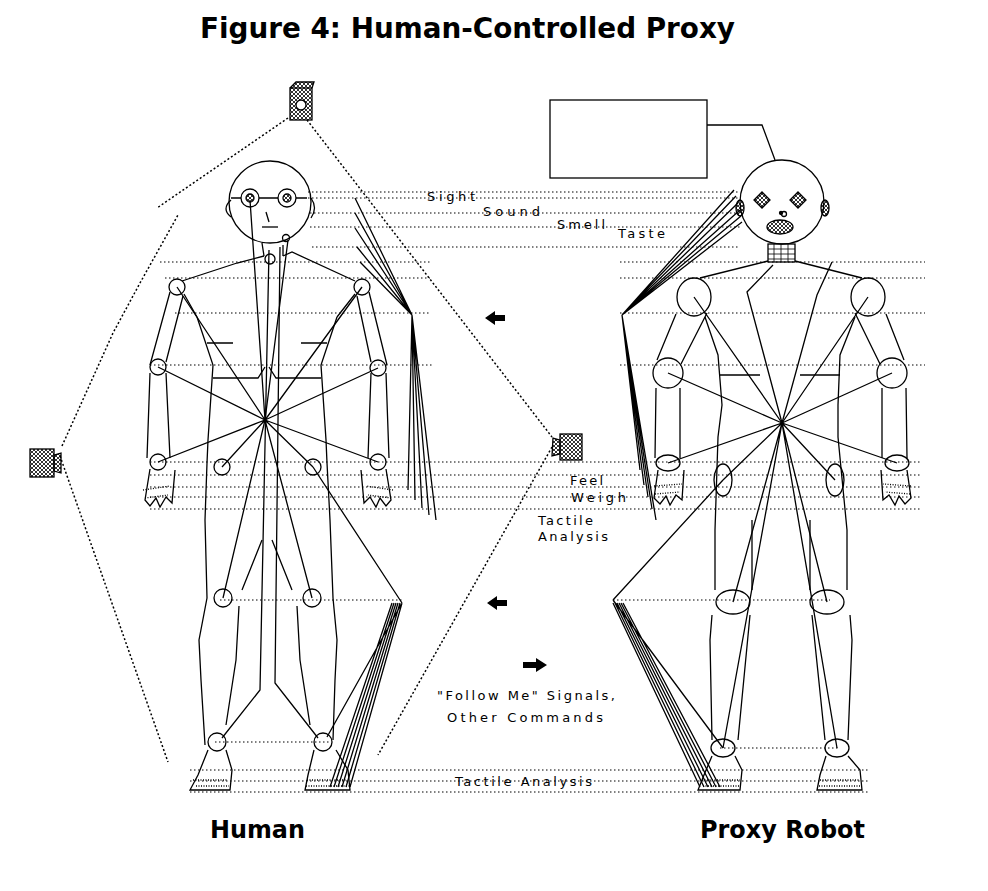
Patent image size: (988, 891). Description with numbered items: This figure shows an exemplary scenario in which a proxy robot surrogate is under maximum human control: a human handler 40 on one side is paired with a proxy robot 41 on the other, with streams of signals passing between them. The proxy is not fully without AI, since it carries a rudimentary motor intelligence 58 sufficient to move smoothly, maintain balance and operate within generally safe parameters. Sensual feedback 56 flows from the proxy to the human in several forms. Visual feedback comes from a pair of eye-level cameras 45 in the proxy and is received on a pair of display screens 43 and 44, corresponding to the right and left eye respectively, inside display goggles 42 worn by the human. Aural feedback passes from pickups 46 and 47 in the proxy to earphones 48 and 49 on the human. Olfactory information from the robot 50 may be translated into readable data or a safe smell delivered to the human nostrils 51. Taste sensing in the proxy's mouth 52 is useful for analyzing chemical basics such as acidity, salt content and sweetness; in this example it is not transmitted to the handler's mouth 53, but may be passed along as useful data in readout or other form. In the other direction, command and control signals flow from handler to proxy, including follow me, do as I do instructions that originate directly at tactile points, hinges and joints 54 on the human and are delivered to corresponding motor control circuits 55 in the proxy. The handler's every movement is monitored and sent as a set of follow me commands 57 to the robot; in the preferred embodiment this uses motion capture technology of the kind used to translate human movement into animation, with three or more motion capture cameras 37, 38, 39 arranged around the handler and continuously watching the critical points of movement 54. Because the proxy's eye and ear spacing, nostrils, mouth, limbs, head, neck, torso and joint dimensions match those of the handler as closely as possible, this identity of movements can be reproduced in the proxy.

The motion capture camera 37 is at (45, 481).
The motion capture camera 38 is at (290, 101).
The motion capture camera 39 is at (575, 434).
The human handler 40 is at (205, 561).
The proxy robot 41 is at (847, 561).
The display goggles 42 is at (242, 197).
The display screen 43 is at (249, 192).
The display screen 44 is at (285, 193).
The eye-level cameras 45 is at (796, 193).
The aural sensor 46 is at (737, 199).
The aural sensor 47 is at (825, 199).
The earphone 48 is at (229, 212).
The earphone 49 is at (290, 239).
The olfactory sensor 50 is at (788, 215).
The human nostrils 51 is at (266, 214).
The proxy mouth 52 is at (764, 232).
The handler's mouth 53 is at (267, 264).
The tactile points, hinges and joints 54 is at (268, 399).
The motor control circuits 55 is at (782, 522).
The sensual feedback 56 is at (542, 461).
The follow me commands 57 is at (512, 666).
The motor intelligence 58 is at (550, 118).